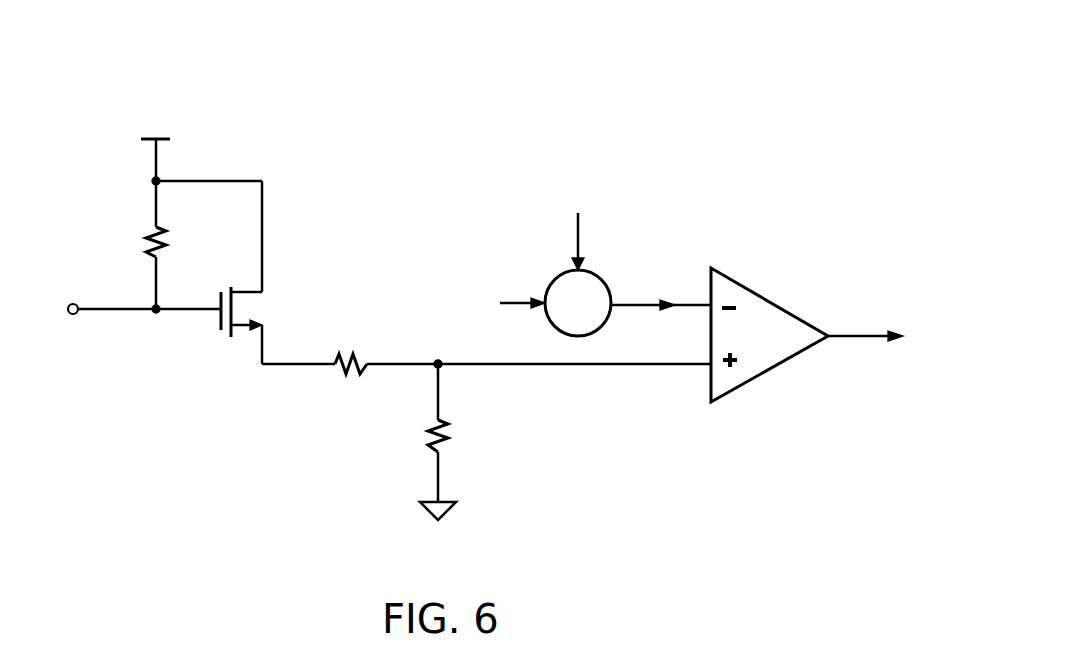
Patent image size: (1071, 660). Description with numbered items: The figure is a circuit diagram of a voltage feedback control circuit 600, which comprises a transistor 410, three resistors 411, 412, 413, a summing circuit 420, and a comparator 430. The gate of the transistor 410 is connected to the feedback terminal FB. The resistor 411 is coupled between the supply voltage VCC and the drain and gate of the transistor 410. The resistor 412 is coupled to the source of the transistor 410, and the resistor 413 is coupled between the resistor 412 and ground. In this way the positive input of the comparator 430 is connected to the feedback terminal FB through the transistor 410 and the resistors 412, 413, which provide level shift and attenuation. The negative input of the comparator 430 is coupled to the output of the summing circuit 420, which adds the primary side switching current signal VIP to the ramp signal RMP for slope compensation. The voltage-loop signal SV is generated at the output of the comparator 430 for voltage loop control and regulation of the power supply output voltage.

The voltage feedback control circuit 600 is at (931, 46).
The transistor 410 is at (231, 337).
The resistor 411 is at (146, 246).
The resistor 412 is at (345, 355).
The resistor 413 is at (448, 438).
The summing circuit 420 is at (605, 282).
The comparator 430 is at (768, 298).